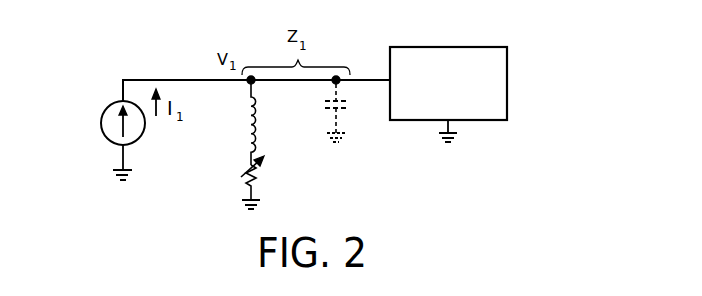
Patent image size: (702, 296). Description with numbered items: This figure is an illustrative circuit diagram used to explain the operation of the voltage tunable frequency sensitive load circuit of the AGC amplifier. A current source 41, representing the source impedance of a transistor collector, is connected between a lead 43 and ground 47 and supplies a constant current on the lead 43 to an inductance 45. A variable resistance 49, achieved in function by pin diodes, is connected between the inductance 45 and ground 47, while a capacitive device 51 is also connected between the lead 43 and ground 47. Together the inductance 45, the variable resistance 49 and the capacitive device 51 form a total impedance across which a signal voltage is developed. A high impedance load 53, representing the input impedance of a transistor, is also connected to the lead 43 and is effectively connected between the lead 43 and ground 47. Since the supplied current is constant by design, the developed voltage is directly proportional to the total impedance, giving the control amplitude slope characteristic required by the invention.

The current source 41 is at (100, 125).
The lead 43 is at (167, 79).
The inductance 45 is at (251, 116).
The ground 47 is at (127, 177).
The variable resistance 49 is at (249, 167).
The capacitive device 51 is at (328, 110).
The high impedance load 53 is at (507, 75).